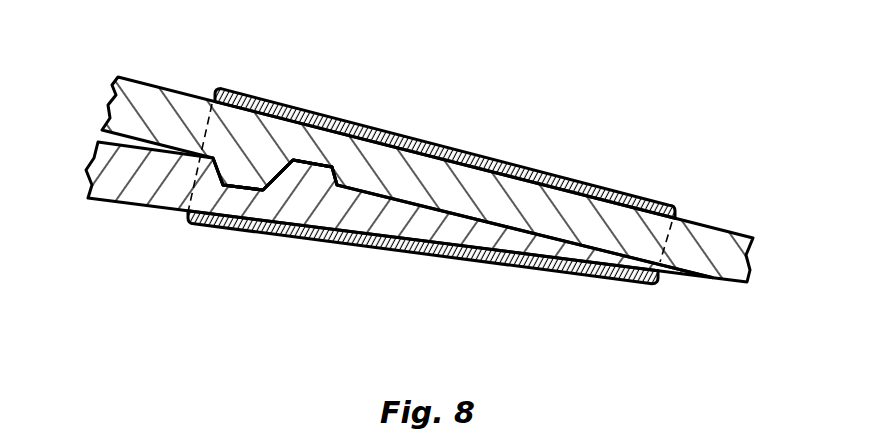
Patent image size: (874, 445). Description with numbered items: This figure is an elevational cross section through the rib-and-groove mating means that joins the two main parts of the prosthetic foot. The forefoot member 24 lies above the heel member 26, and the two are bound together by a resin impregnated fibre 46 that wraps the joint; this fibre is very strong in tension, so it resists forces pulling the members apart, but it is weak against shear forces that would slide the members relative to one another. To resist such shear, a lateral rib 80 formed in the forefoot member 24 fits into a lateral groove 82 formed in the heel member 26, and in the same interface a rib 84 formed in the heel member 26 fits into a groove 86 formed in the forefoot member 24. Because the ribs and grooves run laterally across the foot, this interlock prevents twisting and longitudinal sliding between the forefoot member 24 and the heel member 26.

The forefoot member 24 is at (697, 248).
The heel member 26 is at (115, 187).
The resin impregnated fibre 46 is at (447, 143).
The lateral rib 80 is at (250, 177).
The lateral groove 82 is at (233, 185).
The rib 84 is at (298, 173).
The groove 86 is at (322, 160).